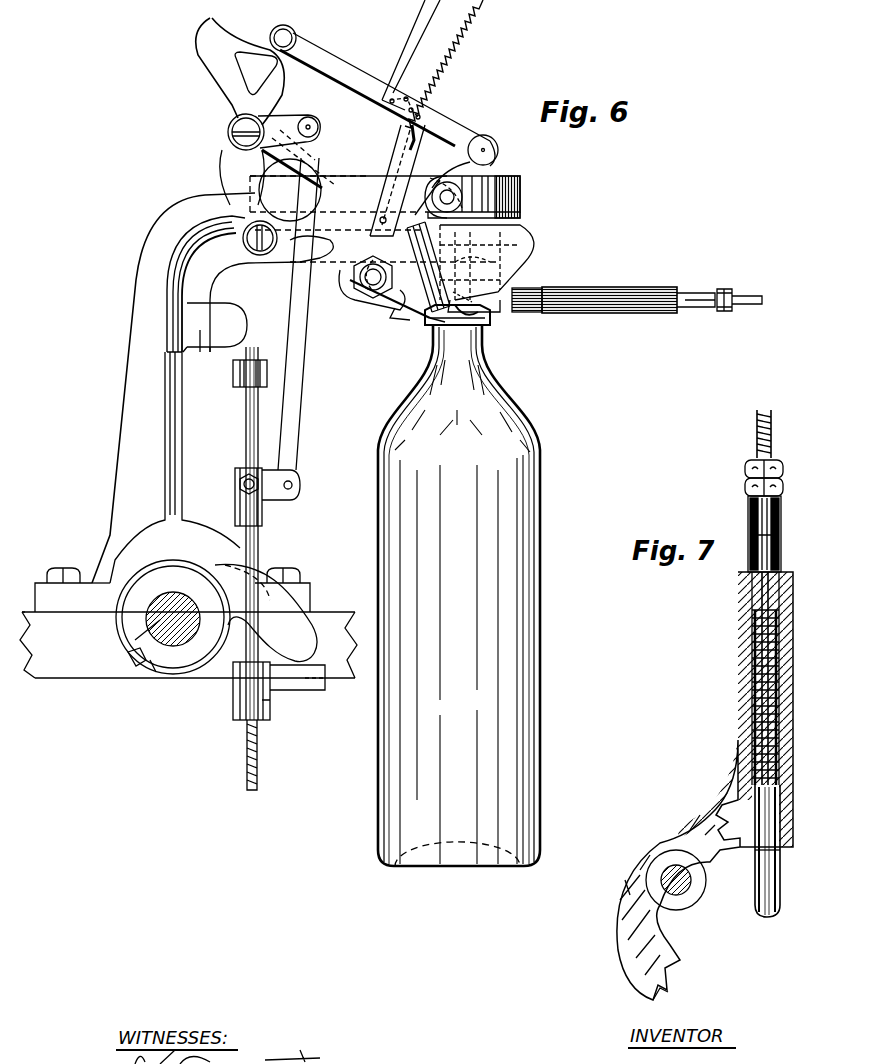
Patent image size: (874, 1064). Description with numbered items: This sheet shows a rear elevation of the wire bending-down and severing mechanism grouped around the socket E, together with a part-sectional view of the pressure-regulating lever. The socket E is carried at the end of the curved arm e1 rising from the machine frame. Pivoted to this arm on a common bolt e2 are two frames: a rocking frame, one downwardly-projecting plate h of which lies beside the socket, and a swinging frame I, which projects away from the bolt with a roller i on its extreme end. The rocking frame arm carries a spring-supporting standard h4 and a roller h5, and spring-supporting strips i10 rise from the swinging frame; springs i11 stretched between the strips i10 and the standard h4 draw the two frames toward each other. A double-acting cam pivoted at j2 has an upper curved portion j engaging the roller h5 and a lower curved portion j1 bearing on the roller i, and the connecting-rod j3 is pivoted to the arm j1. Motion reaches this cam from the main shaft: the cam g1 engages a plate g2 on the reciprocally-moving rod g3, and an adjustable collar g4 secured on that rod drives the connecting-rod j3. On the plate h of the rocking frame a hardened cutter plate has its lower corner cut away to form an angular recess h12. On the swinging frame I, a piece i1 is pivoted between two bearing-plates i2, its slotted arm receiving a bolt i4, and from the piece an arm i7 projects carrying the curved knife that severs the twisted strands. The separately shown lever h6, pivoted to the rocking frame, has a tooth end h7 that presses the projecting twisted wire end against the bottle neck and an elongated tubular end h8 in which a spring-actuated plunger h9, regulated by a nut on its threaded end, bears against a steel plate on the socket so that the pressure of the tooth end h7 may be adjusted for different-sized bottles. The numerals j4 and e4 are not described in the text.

In FIG. 6, the roller h5 is at (274, 31).
In FIG. 6, the spring-supporting standard h4 is at (425, 38).
In FIG. 6, the springs i11 is at (432, 75).
In FIG. 6, the upper curved portion of double-acting cam j is at (272, 93).
In FIG. 6, the pivotal point of double-acting cam j2 is at (232, 138).
In FIG. 6, the pin of lever j4 is at (289, 128).
In FIG. 6, the lower curved portion of double-acting cam j1 is at (330, 178).
In FIG. 6, the boss of frame e4 is at (375, 210).
In FIG. 6, the spring-supporting strips i10 is at (395, 207).
In FIG. 6, the roller i is at (244, 240).
In FIG. 6, the pivot bolt e2 is at (443, 197).
In FIG. 6, the socket E is at (505, 224).
In FIG. 6, the swinging frame I is at (425, 198).
In FIG. 6, the bearing-plates i2 is at (400, 340).
In FIG. 6, the bolt i4 is at (372, 283).
In FIG. 6, the downwardly-projecting plate of rocking frame h is at (487, 268).
In FIG. 6, the pivoted piece i1 is at (392, 316).
In FIG. 6, the arm i7 is at (432, 314).
In FIG. 6, the angular recess h12 is at (470, 320).
In FIG. 6, the spring-actuated plunger h9 is at (528, 314).
In FIG. 7, the spring-actuated plunger h9 is at (782, 870).
In FIG. 6, the elongated tubular end of lever h8 is at (585, 315).
In FIG. 7, the elongated tubular end of lever h8 is at (740, 670).
In FIG. 6, the curved arm e1 is at (197, 388).
In FIG. 6, the connecting-rod j3 is at (290, 329).
In FIG. 6, the adjustable collar g4 is at (236, 474).
In FIG. 6, the reciprocally-moving rod g3 is at (259, 548).
In FIG. 6, the cam g1 is at (216, 617).
In FIG. 6, the plate g2 is at (270, 678).
In FIG. 7, the bending-down lever h6 is at (690, 840).
In FIG. 7, the tooth end h7 is at (660, 974).